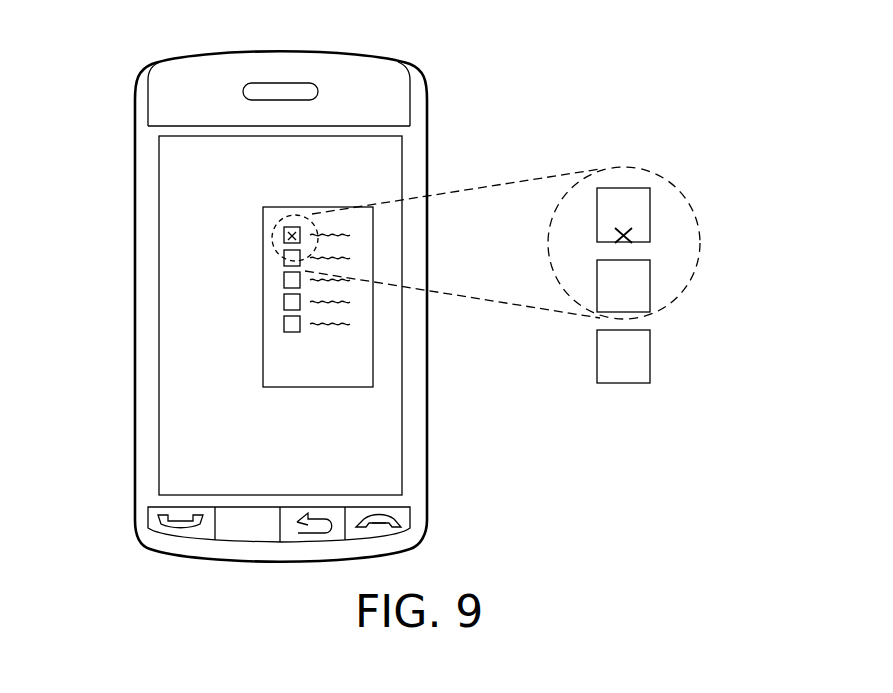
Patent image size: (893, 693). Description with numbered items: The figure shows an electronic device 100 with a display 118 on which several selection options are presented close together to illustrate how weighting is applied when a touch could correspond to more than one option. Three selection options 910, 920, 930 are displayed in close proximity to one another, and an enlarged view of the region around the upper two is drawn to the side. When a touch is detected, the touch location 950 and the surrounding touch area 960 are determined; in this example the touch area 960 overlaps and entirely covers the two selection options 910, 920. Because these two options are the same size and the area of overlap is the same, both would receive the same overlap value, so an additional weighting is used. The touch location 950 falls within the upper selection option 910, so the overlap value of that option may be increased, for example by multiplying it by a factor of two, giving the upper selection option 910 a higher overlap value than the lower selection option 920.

The mobile terminal 100 is at (122, 28).
The display unit 118 is at (159, 181).
The selection option 910 is at (284, 228).
The touch location 950 is at (290, 236).
The selection option 920 is at (284, 254).
The selection option 930 is at (284, 276).
The touch area 960 is at (292, 214).